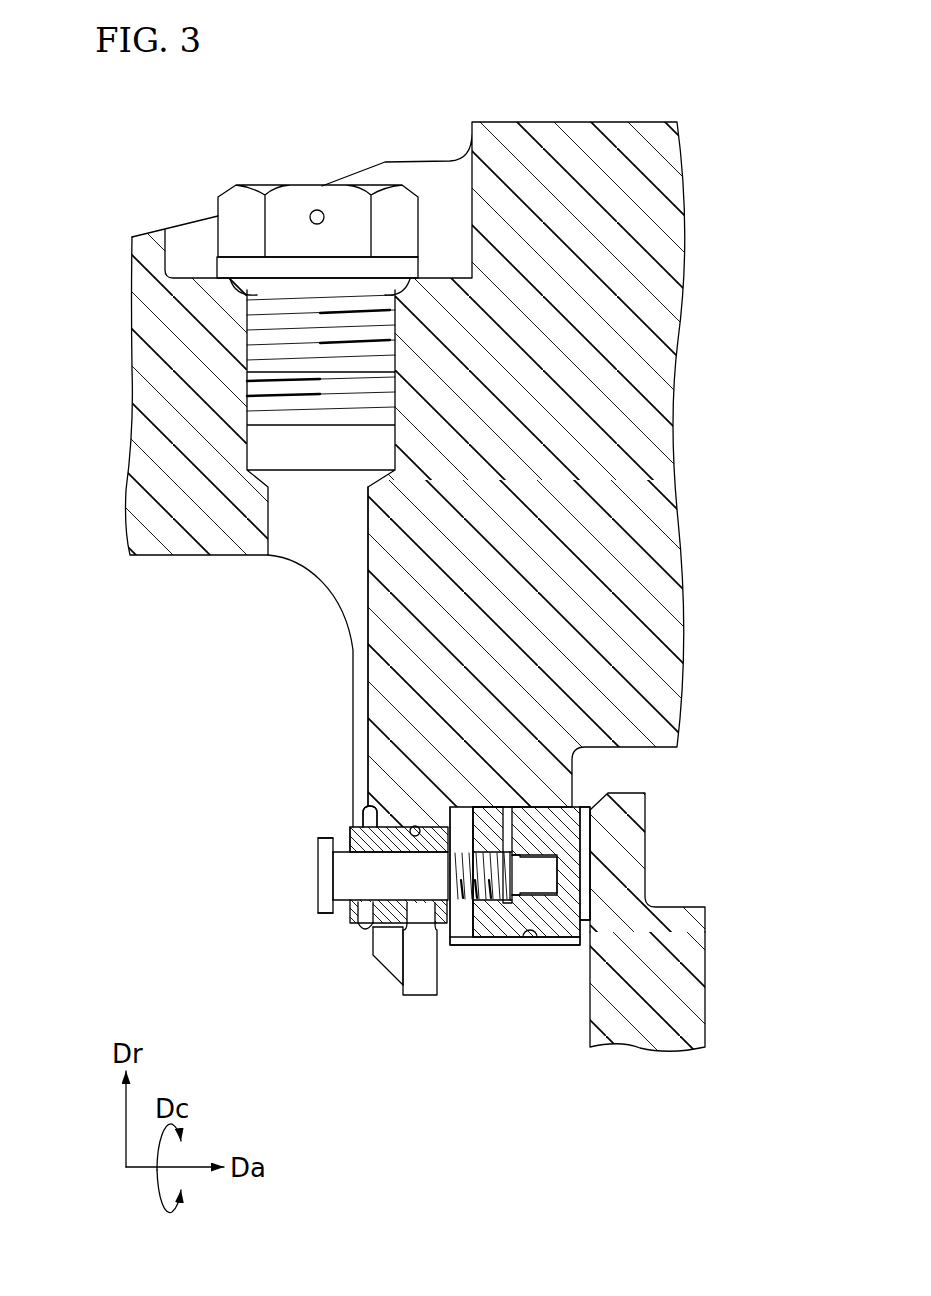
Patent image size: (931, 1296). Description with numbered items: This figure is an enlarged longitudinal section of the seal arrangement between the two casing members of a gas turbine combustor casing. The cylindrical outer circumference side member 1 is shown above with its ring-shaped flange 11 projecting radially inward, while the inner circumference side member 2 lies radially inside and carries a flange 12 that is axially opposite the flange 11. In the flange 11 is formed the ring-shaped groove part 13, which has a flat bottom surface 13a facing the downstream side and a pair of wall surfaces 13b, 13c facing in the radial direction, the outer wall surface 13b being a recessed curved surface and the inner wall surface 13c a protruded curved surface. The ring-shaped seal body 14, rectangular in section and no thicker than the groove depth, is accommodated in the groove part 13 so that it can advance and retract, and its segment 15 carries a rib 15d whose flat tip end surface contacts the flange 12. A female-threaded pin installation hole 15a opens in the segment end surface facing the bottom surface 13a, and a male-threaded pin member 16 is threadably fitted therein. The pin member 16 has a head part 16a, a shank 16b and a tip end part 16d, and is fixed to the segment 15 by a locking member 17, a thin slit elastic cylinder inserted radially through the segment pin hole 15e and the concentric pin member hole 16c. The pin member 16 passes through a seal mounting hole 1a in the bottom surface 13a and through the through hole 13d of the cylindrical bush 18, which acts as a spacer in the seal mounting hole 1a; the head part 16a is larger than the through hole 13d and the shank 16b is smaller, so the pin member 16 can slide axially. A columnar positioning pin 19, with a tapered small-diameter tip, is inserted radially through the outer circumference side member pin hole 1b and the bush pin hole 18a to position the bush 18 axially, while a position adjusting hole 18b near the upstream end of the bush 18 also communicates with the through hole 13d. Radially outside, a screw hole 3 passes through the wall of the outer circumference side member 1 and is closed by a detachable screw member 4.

The outer circumference side member 1 is at (648, 290).
The seal mounting hole 1a is at (370, 806).
The outer circumference side member pin hole 1b is at (374, 984).
The inner circumference side member 2 is at (649, 1032).
The screw hole 3 is at (250, 332).
The screw member 4 is at (290, 207).
The flange 11 is at (400, 952).
The flange 12 is at (650, 844).
The groove part 13 is at (450, 806).
The bottom surface 13a is at (467, 946).
The wall surface 13b is at (521, 821).
The wall surface 13c is at (520, 948).
The through hole 13d is at (370, 852).
The seal body 14 is at (592, 826).
The segment 15 is at (526, 872).
The pin installation hole 15a is at (506, 906).
The rib 15d is at (537, 935).
The segment pin hole 15e is at (513, 808).
The pin member 16 is at (313, 878).
The head part 16a is at (320, 906).
The shank 16b is at (352, 872).
The pin member hole 16c is at (512, 852).
The tip end part 16d is at (559, 880).
The locking member 17 is at (494, 817).
The bush 18 is at (356, 838).
The bush pin hole 18a is at (429, 926).
The position adjusting hole 18b is at (363, 916).
The positioning pin 19 is at (410, 985).